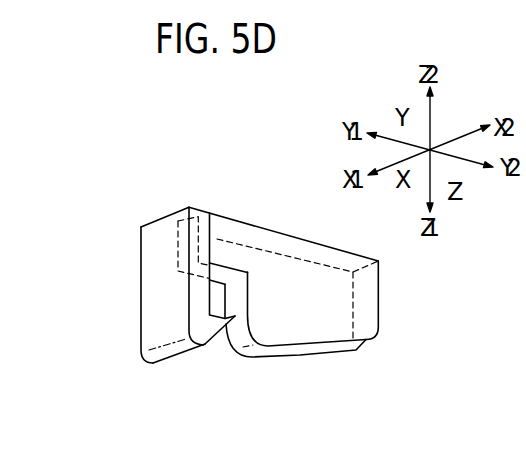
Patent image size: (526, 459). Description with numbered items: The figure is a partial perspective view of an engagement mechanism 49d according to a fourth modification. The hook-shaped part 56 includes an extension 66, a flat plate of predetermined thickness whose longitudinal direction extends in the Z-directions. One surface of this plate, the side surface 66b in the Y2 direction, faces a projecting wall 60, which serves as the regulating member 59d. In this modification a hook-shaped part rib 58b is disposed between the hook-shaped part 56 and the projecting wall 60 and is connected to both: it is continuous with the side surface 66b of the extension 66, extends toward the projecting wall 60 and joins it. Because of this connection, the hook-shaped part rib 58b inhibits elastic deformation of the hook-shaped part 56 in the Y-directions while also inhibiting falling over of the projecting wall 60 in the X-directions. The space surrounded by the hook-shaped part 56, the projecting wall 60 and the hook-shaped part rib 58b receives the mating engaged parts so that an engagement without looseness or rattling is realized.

The engagement mechanism 49d is at (210, 148).
The extension 66 is at (164, 219).
The side surface 66b is at (212, 300).
The hook-shaped part rib 58b is at (234, 240).
The hook-shaped part 56 is at (136, 296).
The projecting wall 60 is at (389, 308).
The regulating member 59d is at (419, 304).